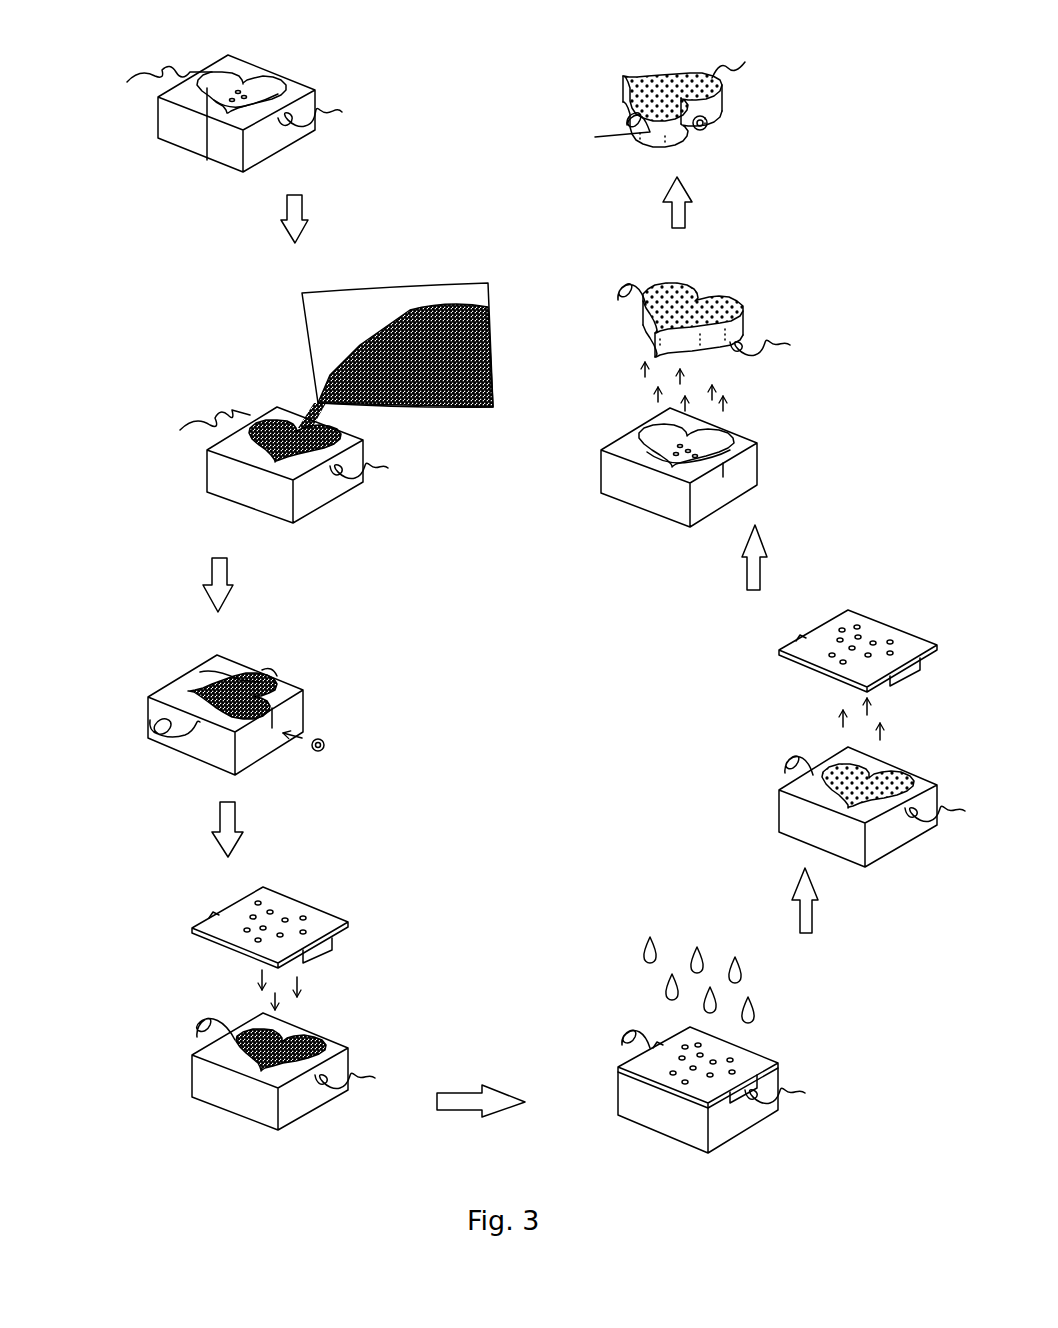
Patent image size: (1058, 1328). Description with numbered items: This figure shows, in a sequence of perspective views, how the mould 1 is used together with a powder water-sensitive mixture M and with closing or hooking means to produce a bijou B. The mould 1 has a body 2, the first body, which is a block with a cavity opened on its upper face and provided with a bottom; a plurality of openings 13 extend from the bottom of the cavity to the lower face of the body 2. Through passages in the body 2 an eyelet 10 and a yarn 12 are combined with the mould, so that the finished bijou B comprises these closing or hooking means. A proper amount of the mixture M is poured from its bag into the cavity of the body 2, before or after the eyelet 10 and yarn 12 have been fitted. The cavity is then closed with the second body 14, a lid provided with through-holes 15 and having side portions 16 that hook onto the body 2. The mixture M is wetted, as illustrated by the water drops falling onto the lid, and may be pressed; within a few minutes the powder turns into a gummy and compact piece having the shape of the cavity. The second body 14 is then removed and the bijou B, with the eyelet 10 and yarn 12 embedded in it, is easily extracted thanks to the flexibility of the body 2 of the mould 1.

The mould 1 is at (800, 1095).
The body 2 is at (163, 165).
The eyelet 10 is at (325, 745).
The yarn 12 is at (747, 62).
The openings 13 is at (207, 160).
The second body 14 is at (547, 817).
The through-holes 15 is at (271, 900).
The side portions 16 is at (212, 913).
The powder water-sensitive mixture M is at (450, 392).
The bijou B is at (893, 780).